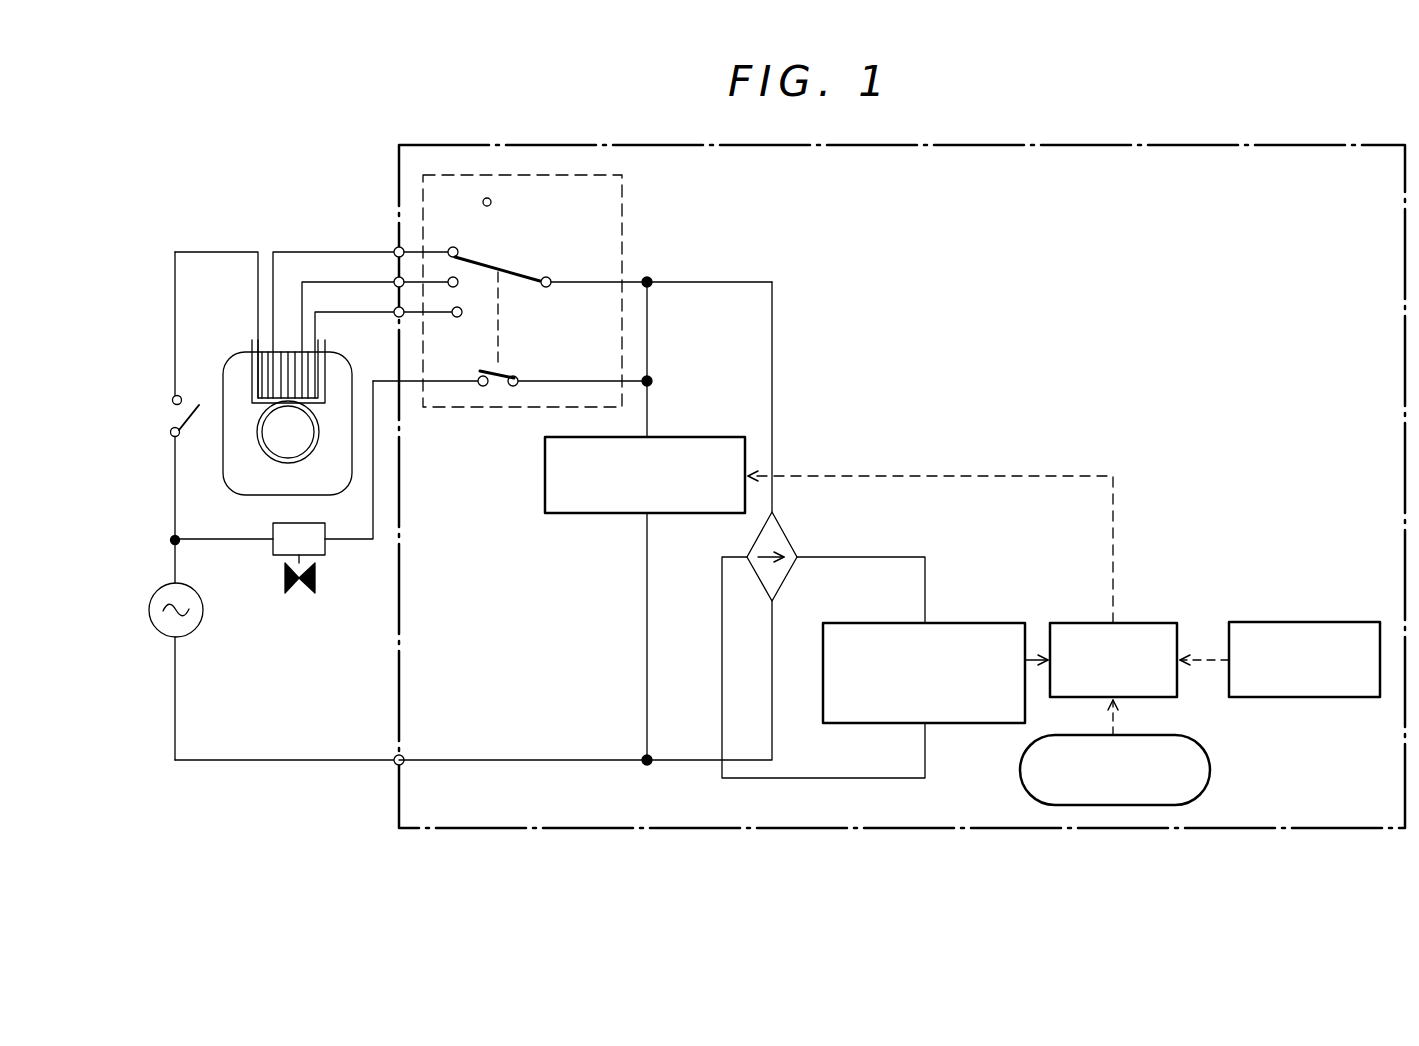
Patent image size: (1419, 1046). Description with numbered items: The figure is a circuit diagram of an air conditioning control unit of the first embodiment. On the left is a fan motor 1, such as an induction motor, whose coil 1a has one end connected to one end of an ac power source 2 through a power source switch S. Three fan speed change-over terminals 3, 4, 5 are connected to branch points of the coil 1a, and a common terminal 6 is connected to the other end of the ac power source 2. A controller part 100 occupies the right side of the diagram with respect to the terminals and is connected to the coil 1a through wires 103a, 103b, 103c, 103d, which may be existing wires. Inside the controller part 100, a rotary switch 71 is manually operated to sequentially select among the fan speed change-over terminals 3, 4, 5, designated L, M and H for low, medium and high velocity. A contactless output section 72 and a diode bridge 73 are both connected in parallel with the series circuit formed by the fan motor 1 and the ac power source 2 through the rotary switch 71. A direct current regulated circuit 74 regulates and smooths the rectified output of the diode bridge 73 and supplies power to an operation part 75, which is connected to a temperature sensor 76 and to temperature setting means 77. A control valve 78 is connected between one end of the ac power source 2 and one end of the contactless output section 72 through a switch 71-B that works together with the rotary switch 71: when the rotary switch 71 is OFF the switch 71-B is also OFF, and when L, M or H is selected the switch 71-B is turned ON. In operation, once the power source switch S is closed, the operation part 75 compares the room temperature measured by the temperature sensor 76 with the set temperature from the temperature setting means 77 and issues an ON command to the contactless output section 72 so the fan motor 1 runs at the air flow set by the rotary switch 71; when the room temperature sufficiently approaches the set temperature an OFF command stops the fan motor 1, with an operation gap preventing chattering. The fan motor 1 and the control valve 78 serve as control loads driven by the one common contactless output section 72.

The fan motor 1 is at (232, 452).
The coil 1a is at (255, 382).
The ac power source 2 is at (205, 609).
The fan speed change-over terminal 3 is at (394, 250).
The fan speed change-over terminal 4 is at (394, 281).
The fan speed change-over terminal 5 is at (394, 314).
The common terminal 6 is at (394, 755).
The rotary switch 71 is at (622, 218).
The switch 71-B is at (486, 395).
The contactless output section 72 is at (677, 434).
The diode bridge 73 is at (797, 540).
The direct current regulated circuit 74 is at (998, 620).
The operation part 75 is at (1176, 600).
The temperature sensor 76 is at (1320, 598).
The temperature setting means 77 is at (1020, 752).
The control valve 78 is at (322, 545).
The controller part 100 is at (828, 828).
The wire 103a is at (273, 272).
The wire 103b is at (302, 306).
The wire 103c is at (315, 335).
The wire 103d is at (229, 760).
The power source switch S is at (185, 344).